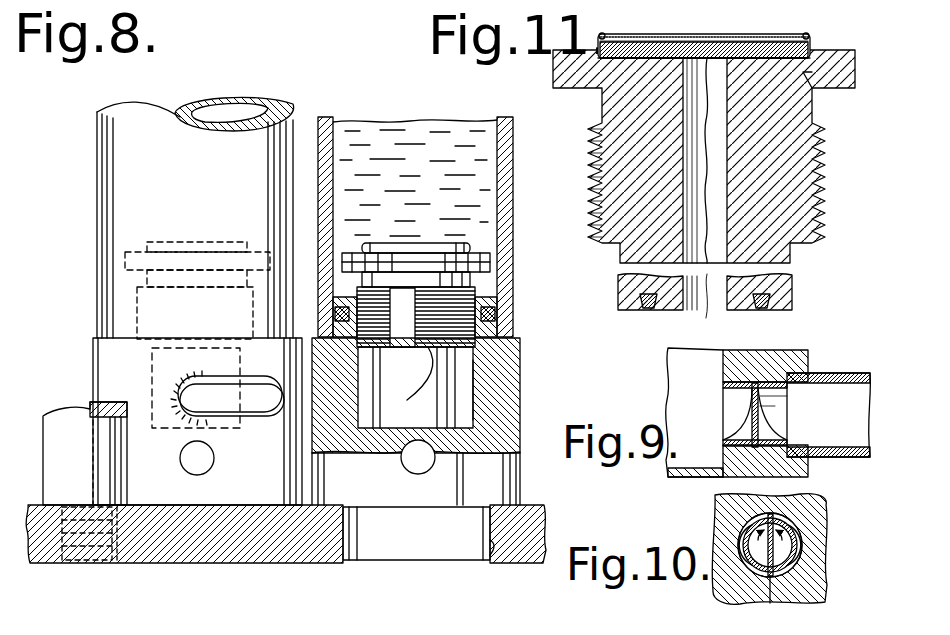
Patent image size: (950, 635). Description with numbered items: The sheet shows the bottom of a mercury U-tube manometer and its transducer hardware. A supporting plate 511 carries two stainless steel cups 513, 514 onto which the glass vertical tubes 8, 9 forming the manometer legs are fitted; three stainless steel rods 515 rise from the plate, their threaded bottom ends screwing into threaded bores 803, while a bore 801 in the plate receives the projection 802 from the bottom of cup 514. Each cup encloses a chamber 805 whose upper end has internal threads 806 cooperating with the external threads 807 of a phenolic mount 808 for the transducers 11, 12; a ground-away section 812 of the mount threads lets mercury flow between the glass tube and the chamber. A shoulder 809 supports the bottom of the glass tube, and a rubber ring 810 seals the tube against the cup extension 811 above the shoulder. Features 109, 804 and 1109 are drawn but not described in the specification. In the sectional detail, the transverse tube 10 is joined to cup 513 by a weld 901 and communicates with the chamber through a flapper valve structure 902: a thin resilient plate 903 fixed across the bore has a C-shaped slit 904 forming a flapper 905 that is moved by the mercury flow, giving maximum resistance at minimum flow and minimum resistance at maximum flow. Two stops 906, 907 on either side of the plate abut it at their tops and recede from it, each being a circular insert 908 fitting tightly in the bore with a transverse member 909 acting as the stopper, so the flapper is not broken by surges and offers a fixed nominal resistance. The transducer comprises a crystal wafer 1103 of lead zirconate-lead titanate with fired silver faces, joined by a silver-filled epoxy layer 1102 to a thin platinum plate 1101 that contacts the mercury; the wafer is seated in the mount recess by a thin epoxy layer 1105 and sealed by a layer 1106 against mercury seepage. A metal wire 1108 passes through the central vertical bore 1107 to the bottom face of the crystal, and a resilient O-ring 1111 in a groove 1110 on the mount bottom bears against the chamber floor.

In FIG. 8, the vertical tube 8 is at (97, 225).
In FIG. 8, the transducer 11 is at (206, 236).
In FIG. 11, the transducer 11 is at (744, 23).
In FIG. 8, the transducer 12 is at (416, 240).
In FIG. 8, the vertical tube 9 is at (193, 354).
In FIG. 8, the transverse tube 10 is at (236, 386).
In FIG. 9, the transverse tube 10 is at (723, 356).
In FIG. 8, the knurled cap 109 is at (371, 270).
In FIG. 8, the stainless steel cup 513 is at (97, 355).
In FIG. 9, the stainless steel cup 513 is at (800, 360).
In FIG. 10, the stainless steel cup 513 is at (820, 581).
In FIG. 8, the stainless steel rod 515 is at (43, 416).
In FIG. 8, the supporting plate 511 is at (198, 548).
In FIG. 8, the mounting bolt 804 is at (86, 563).
In FIG. 8, the threaded bore 803 is at (117, 565).
In FIG. 8, the extension of the stainless cup 811 is at (186, 472).
In FIG. 8, the shoulder 809 is at (325, 336).
In FIG. 8, the external threads 807 is at (477, 293).
In FIG. 11, the external threads 807 is at (589, 145).
In FIG. 8, the rubber ring 810 is at (495, 313).
In FIG. 8, the chamber 805 is at (470, 368).
In FIG. 9, the chamber 805 is at (668, 430).
In FIG. 8, the stainless steel cup 514 is at (516, 381).
In FIG. 8, the phenolic mount 808 is at (442, 401).
In FIG. 11, the phenolic mount 808 is at (853, 58).
In FIG. 8, the internal threads 806 is at (356, 364).
In FIG. 8, the ground-away section 812 is at (412, 392).
In FIG. 8, the projection 802 is at (404, 548).
In FIG. 8, the bore 801 is at (498, 552).
In FIG. 11, the platinum plate 1101 is at (630, 22).
In FIG. 11, the silver-filled epoxy layer 1102 is at (656, 40).
In FIG. 11, the crystal wafer 1103 is at (694, 46).
In FIG. 11, the mesh 1109 is at (748, 36).
In FIG. 11, the sealing layer 1106 is at (808, 33).
In FIG. 11, the thin epoxy layer 1105 is at (804, 74).
In FIG. 11, the central vertical bore 1107 is at (718, 150).
In FIG. 11, the metal wire 1108 is at (705, 200).
In FIG. 11, the groove 1110 is at (793, 286).
In FIG. 11, the resilient O-ring 1111 is at (690, 313).
In FIG. 9, the weld 901 is at (808, 462).
In FIG. 9, the flapper valve structure 902 is at (760, 376).
In FIG. 9, the resilient plate 903 is at (780, 404).
In FIG. 10, the resilient plate 903 is at (790, 522).
In FIG. 10, the C-shaped slit 904 is at (797, 554).
In FIG. 10, the flapper 905 is at (756, 548).
In FIG. 9, the stop 906 is at (724, 399).
In FIG. 9, the stop 907 is at (780, 420).
In FIG. 10, the circular insert 908 is at (772, 602).
In FIG. 10, the transverse member 909 is at (746, 521).